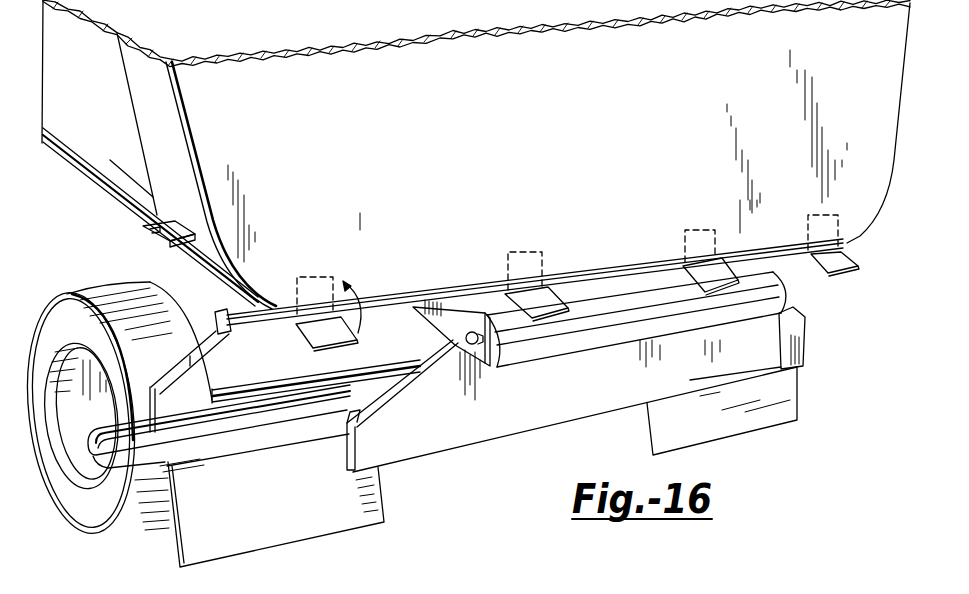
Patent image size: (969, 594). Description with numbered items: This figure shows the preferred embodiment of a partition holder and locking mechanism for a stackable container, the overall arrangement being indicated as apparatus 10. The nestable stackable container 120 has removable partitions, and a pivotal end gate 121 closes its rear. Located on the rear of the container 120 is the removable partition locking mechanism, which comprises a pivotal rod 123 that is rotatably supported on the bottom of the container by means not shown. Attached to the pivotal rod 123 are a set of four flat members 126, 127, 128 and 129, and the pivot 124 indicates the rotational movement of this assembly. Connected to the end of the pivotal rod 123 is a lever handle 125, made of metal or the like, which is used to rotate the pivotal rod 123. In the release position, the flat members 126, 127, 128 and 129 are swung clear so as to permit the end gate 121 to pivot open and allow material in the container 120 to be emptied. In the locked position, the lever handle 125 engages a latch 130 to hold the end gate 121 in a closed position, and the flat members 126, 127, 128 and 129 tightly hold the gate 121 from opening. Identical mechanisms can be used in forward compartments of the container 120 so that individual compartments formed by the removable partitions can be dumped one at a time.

The unloading apparatus 10 is at (815, 367).
The nestable stackable container 120 is at (83, 130).
The pivotal end gate 121 is at (257, 127).
The pivotal rod 123 is at (256, 299).
The pivot 124 is at (279, 306).
The lever handle 125 is at (190, 357).
The flat member 126 is at (313, 348).
The flat member 127 is at (573, 307).
The flat member 128 is at (738, 279).
The flat member 129 is at (857, 268).
The latch 130 is at (147, 236).